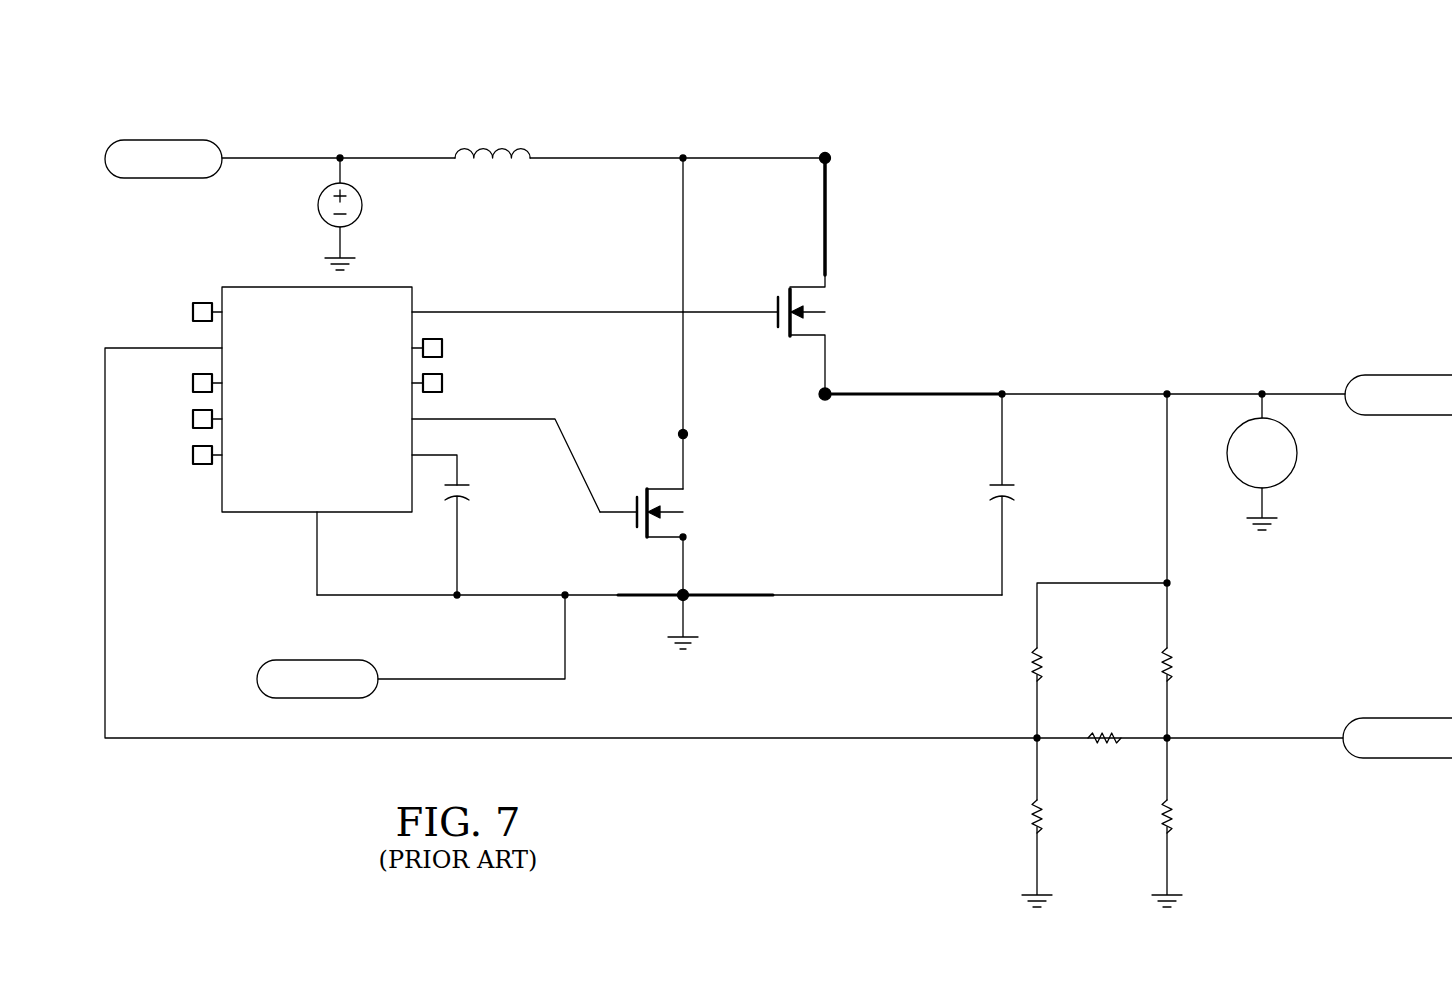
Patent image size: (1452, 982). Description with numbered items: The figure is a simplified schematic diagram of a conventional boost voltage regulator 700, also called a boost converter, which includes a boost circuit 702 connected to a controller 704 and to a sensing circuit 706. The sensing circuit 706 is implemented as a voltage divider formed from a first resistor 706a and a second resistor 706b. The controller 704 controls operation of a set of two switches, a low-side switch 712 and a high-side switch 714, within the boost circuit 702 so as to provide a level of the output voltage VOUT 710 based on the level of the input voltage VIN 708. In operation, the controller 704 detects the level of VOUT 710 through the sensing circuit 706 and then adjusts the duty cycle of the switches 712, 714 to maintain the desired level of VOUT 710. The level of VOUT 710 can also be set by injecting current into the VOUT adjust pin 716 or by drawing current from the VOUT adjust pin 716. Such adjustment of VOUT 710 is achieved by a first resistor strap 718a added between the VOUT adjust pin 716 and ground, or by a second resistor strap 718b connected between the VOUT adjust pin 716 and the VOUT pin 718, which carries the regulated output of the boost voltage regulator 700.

The boost voltage regulator 700 is at (1185, 44).
The boost circuit 702 is at (910, 255).
The controller 704 is at (246, 514).
The sensing circuit 706 is at (912, 782).
The resistor R9 706a is at (1030, 814).
The resistor R7 706b is at (1030, 662).
The VIN 708 is at (398, 124).
The VOUT 710 is at (1132, 364).
The switch S2 712 is at (632, 528).
The switch S4 714 is at (775, 324).
The VOUT adjust pin 716 is at (1395, 760).
The VOUT pin 718 is at (1400, 377).
The resistor strap RS1 718a is at (1173, 812).
The resistor strap RS2 718b is at (1173, 660).